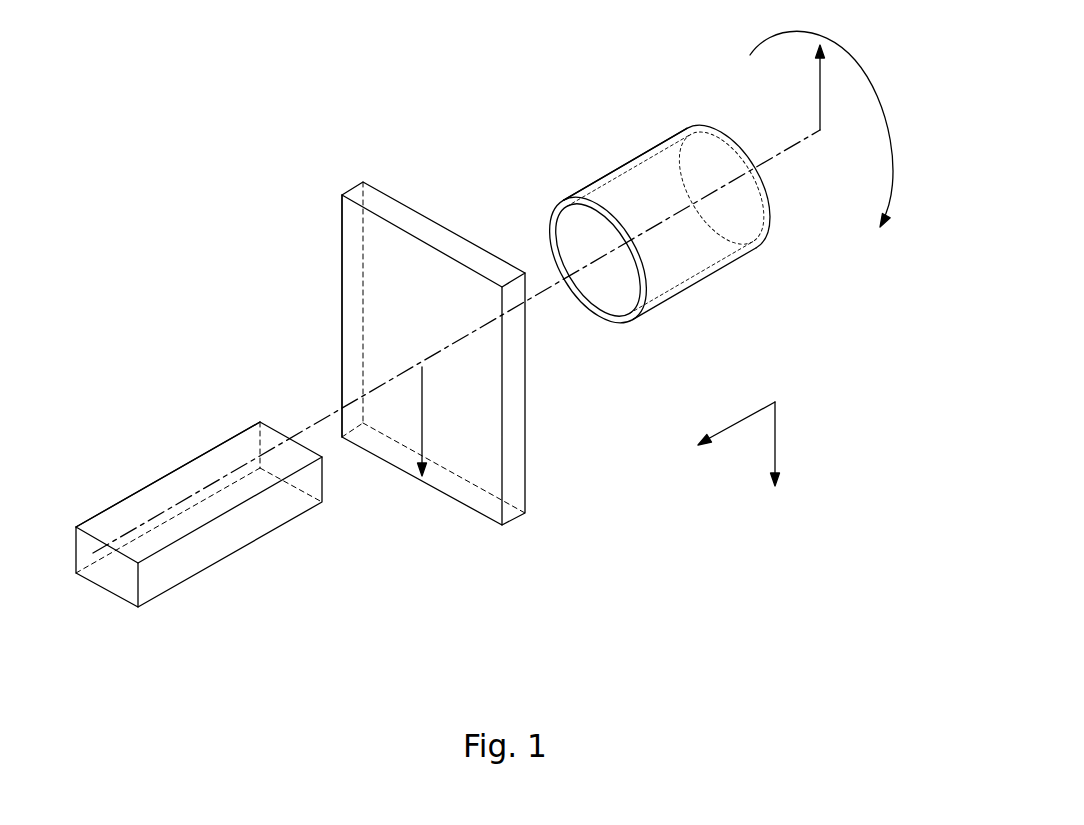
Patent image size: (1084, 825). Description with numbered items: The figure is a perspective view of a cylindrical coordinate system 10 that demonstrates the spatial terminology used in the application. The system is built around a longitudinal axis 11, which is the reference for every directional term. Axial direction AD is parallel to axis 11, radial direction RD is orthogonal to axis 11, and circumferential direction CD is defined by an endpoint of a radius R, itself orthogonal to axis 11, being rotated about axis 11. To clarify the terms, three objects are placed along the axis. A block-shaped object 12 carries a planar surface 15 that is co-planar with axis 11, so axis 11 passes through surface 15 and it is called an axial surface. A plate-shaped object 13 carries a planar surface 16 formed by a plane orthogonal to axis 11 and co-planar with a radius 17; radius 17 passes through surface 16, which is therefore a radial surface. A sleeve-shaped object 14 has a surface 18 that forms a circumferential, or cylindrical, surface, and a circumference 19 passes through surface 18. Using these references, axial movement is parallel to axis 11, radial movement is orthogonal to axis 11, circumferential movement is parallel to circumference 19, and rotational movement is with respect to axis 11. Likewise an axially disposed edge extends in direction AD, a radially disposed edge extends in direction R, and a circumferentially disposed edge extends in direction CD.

The cylindrical coordinate system 10 is at (290, 229).
The longitudinal axis 11 is at (757, 165).
The object 12 is at (170, 608).
The object 13 is at (541, 520).
The object 14 is at (701, 307).
The axial surface 15 is at (160, 497).
The radial surface 16 is at (355, 313).
The radius 17 is at (422, 415).
The circumferential surface 18 is at (626, 168).
The circumference 19 is at (550, 227).
The radius R is at (820, 82).
The circumferential direction CD is at (858, 72).
The axial direction AD is at (737, 421).
The radial direction RD is at (775, 440).